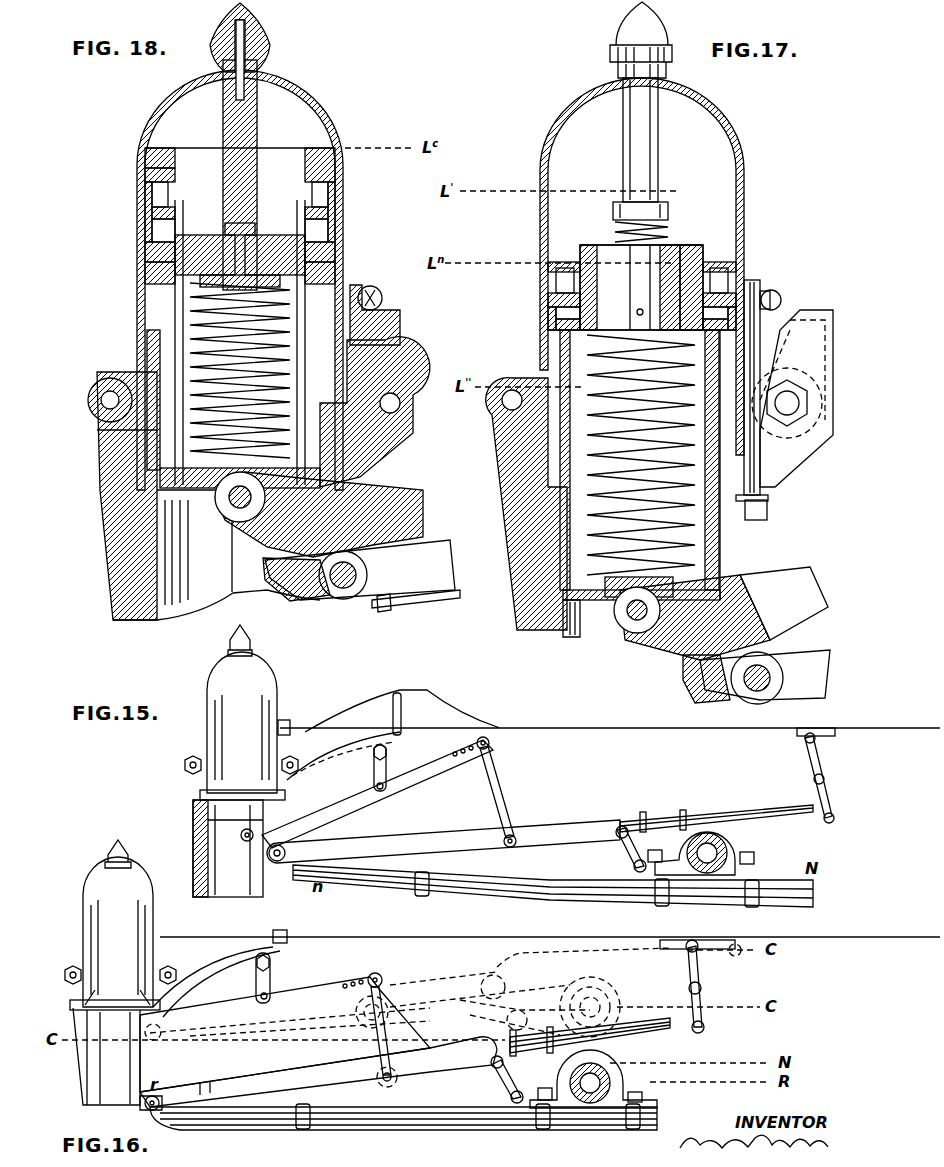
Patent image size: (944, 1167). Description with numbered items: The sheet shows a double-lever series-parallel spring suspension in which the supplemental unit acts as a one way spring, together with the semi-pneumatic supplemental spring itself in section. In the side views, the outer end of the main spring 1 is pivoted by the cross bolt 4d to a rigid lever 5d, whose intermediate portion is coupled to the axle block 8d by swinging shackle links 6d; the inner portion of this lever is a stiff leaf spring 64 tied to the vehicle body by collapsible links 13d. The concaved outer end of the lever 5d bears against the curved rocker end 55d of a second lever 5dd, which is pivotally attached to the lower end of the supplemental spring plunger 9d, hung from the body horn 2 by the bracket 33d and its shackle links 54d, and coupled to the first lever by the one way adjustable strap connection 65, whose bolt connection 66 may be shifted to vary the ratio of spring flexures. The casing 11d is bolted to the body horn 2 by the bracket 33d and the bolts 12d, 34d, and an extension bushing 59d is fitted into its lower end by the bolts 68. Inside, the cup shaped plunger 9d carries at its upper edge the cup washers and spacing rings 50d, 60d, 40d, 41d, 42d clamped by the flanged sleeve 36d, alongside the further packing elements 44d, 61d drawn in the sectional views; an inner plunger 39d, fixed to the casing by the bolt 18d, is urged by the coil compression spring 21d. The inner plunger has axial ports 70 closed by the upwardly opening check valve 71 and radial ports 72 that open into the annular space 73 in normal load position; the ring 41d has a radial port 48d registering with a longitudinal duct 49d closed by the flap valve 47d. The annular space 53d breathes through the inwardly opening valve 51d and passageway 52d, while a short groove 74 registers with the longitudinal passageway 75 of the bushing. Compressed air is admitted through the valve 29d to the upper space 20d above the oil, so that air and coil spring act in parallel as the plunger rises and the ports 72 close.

In FIG. 18, the main spring 1 is at (417, 607).
In FIG. 15, the main spring 1 is at (525, 898).
In FIG. 16, the main spring 1 is at (383, 1122).
In FIG. 15, the body horn 2 is at (417, 710).
In FIG. 18, the cross bolt 4d is at (343, 590).
In FIG. 17, the cross bolt 4d is at (757, 682).
In FIG. 15, the cross bolt 4d is at (278, 862).
In FIG. 16, the cross bolt 4d is at (160, 1112).
In FIG. 18, the rigid lever 5d is at (440, 560).
In FIG. 17, the rigid lever 5d is at (806, 685).
In FIG. 15, the rigid lever 5d is at (380, 868).
In FIG. 16, the rigid lever 5d is at (262, 1100).
In FIG. 18, the second lever 5dd is at (425, 515).
In FIG. 17, the second lever 5dd is at (790, 615).
In FIG. 15, the second lever 5dd is at (355, 805).
In FIG. 16, the second lever 5dd is at (200, 1010).
In FIG. 15, the swinging shackle links 6d is at (618, 855).
In FIG. 16, the swinging shackle links 6d is at (505, 1085).
In FIG. 15, the axle block 8d is at (662, 866).
In FIG. 16, the axle block 8d is at (540, 1098).
In FIG. 18, the supplemental spring plunger 9d is at (205, 490).
In FIG. 17, the supplemental spring plunger 9d is at (722, 541).
In FIG. 15, the supplemental spring plunger 9d is at (225, 818).
In FIG. 18, the casing 11d is at (170, 93).
In FIG. 17, the casing 11d is at (718, 110).
In FIG. 15, the casing 11d is at (224, 742).
In FIG. 16, the casing 11d is at (100, 880).
In FIG. 18, the bolts 12d is at (400, 328).
In FIG. 17, the bolts 12d is at (790, 391).
In FIG. 15, the bolts 12d is at (300, 772).
In FIG. 16, the bolts 12d is at (170, 964).
In FIG. 15, the collapsible links 13d is at (822, 786).
In FIG. 16, the collapsible links 13d is at (706, 1012).
In FIG. 18, the bolt 18d is at (258, 98).
In FIG. 17, the bolt 18d is at (628, 110).
In FIG. 18, the upper space 20d is at (298, 125).
In FIG. 17, the upper space 20d is at (710, 168).
In FIG. 18, the coil compression spring 21d is at (183, 430).
In FIG. 17, the coil compression spring 21d is at (598, 582).
In FIG. 18, the valve 29d is at (266, 42).
In FIG. 18, the bracket 33d is at (360, 462).
In FIG. 17, the bracket 33d is at (800, 316).
In FIG. 15, the bracket 33d is at (335, 735).
In FIG. 16, the bracket 33d is at (213, 953).
In FIG. 17, the bolt 34d is at (772, 292).
In FIG. 15, the bolt 34d is at (284, 720).
In FIG. 18, the flanged sleeve 36d is at (152, 182).
In FIG. 17, the flanged sleeve 36d is at (560, 268).
In FIG. 18, the inner plunger 39d is at (190, 250).
In FIG. 17, the inner plunger 39d is at (590, 255).
In FIG. 18, the spacing ring 40d is at (152, 262).
In FIG. 17, the spacing ring 40d is at (552, 364).
In FIG. 18, the ring 41d is at (152, 221).
In FIG. 17, the ring 41d is at (552, 340).
In FIG. 18, the spacing ring 42d is at (147, 202).
In FIG. 17, the spacing ring 42d is at (556, 316).
In FIG. 18, the gland 44d is at (145, 160).
In FIG. 17, the gland 44d is at (552, 297).
In FIG. 18, the flap valve 47d is at (370, 370).
In FIG. 17, the flap valve 47d is at (765, 480).
In FIG. 18, the radial port 48d is at (327, 250).
In FIG. 17, the radial port 48d is at (742, 347).
In FIG. 18, the longitudinal duct 49d is at (330, 270).
In FIG. 17, the longitudinal duct 49d is at (762, 458).
In FIG. 18, the cup washer 50d is at (150, 292).
In FIG. 17, the cup washer 50d is at (548, 417).
In FIG. 18, the inwardly opening valve 51d is at (382, 304).
In FIG. 18, the passageway 52d is at (398, 347).
In FIG. 18, the annular space 53d is at (105, 380).
In FIG. 15, the shackle links 54d is at (388, 778).
In FIG. 16, the shackle links 54d is at (273, 980).
In FIG. 18, the curved rocker end 55d is at (298, 540).
In FIG. 17, the curved rocker end 55d is at (672, 652).
In FIG. 15, the curved rocker end 55d is at (250, 845).
In FIG. 16, the curved rocker end 55d is at (153, 1040).
In FIG. 18, the extension bushing 59d is at (150, 462).
In FIG. 17, the extension bushing 59d is at (545, 625).
In FIG. 15, the extension bushing 59d is at (200, 840).
In FIG. 16, the extension bushing 59d is at (100, 1090).
In FIG. 18, the spacing ring 60d is at (147, 278).
In FIG. 17, the spacing ring 60d is at (520, 400).
In FIG. 18, the gland nut 61d is at (145, 150).
In FIG. 17, the gland nut 61d is at (550, 275).
In FIG. 15, the stiff leaf spring 64 is at (733, 806).
In FIG. 16, the stiff leaf spring 64 is at (652, 1025).
In FIG. 15, the adjustable strap connection 65 is at (500, 774).
In FIG. 16, the adjustable strap connection 65 is at (378, 1050).
In FIG. 15, the bolt connection 66 is at (490, 744).
In FIG. 16, the bolt connection 66 is at (384, 977).
In FIG. 18, the bolts 68 is at (105, 510).
In FIG. 17, the bolts 68 is at (768, 514).
In FIG. 15, the bolts 68 is at (192, 790).
In FIG. 16, the bolts 68 is at (117, 986).
In FIG. 18, the axial ports 70 is at (273, 253).
In FIG. 18, the check valve 71 is at (310, 232).
In FIG. 17, the check valve 71 is at (606, 240).
In FIG. 18, the radial ports 72 is at (195, 312).
In FIG. 17, the radial ports 72 is at (690, 310).
In FIG. 17, the annular space 73 is at (720, 260).
In FIG. 18, the short groove 74 is at (176, 343).
In FIG. 17, the short groove 74 is at (567, 445).
In FIG. 18, the longitudinal passageway 75 is at (108, 562).
In FIG. 17, the longitudinal passageway 75 is at (570, 472).